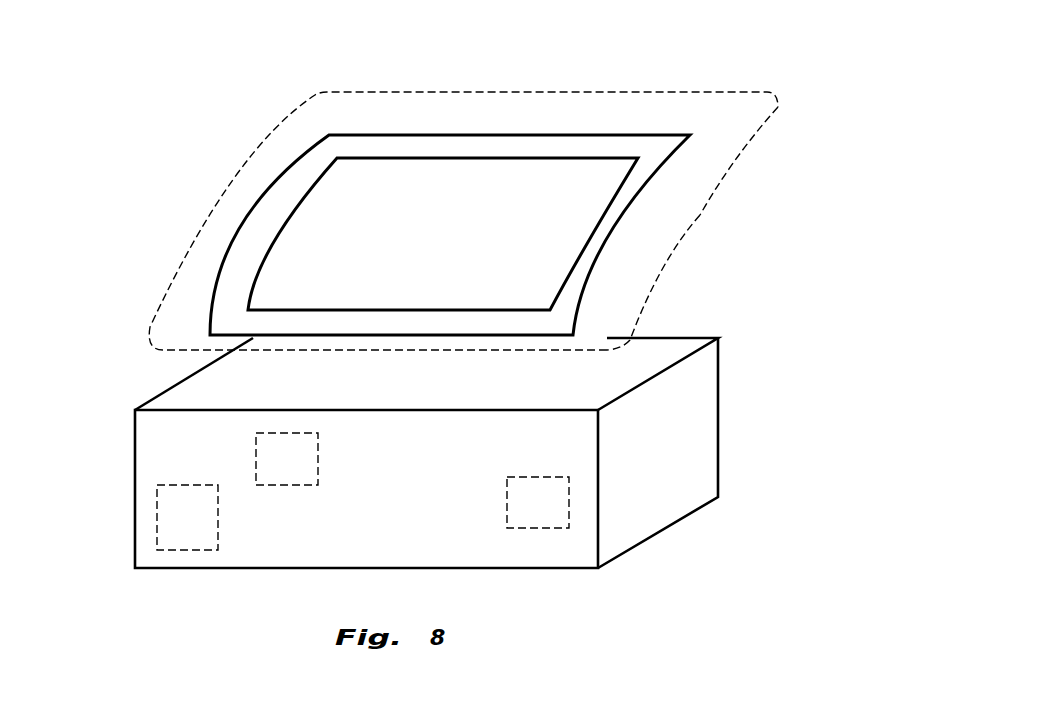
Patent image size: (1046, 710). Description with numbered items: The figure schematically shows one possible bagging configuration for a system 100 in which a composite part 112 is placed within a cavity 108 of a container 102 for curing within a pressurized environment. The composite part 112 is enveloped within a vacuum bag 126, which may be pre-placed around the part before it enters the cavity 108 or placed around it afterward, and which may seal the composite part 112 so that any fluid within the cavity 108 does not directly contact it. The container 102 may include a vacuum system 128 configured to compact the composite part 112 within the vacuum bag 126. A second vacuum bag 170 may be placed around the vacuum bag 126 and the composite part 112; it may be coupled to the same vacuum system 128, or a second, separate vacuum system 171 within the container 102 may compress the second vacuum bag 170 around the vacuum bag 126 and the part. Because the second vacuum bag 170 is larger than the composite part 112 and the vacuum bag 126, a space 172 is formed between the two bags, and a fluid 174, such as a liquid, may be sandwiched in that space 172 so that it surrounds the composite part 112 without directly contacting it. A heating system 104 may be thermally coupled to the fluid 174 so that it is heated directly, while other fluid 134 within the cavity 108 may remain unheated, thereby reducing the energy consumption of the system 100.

The system 100 is at (457, 324).
The container 102 is at (135, 513).
The heating system 104 is at (290, 477).
The cavity 108 is at (593, 400).
The composite part 112 is at (295, 258).
The vacuum bag 126 is at (285, 180).
The vacuum system 128 is at (177, 543).
The fluid 134 is at (212, 404).
The second vacuum bag 170 is at (783, 108).
The second vacuum system 171 is at (540, 518).
The space 172 is at (682, 165).
The fluid 174 is at (657, 239).